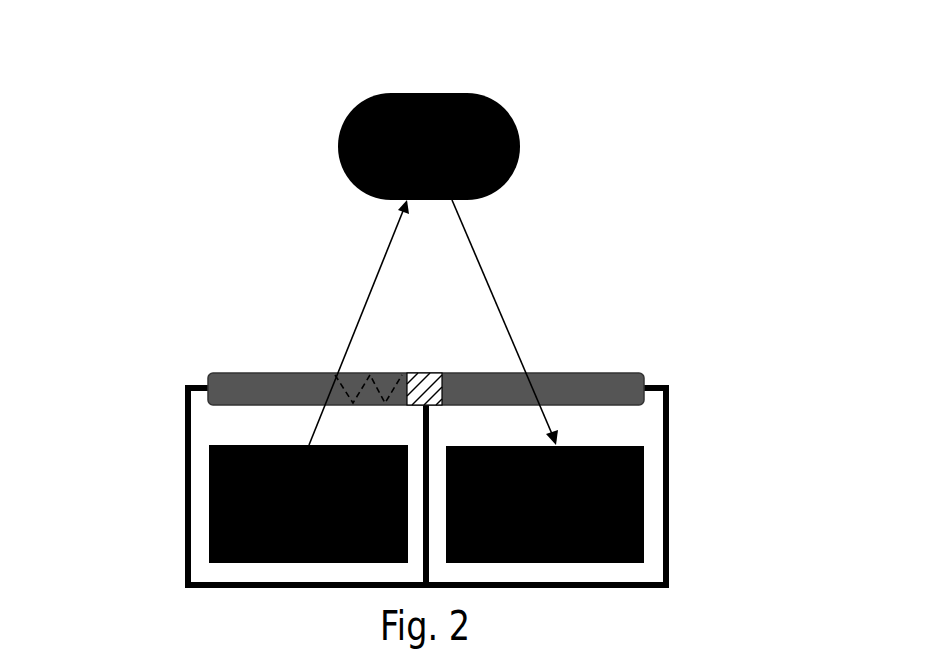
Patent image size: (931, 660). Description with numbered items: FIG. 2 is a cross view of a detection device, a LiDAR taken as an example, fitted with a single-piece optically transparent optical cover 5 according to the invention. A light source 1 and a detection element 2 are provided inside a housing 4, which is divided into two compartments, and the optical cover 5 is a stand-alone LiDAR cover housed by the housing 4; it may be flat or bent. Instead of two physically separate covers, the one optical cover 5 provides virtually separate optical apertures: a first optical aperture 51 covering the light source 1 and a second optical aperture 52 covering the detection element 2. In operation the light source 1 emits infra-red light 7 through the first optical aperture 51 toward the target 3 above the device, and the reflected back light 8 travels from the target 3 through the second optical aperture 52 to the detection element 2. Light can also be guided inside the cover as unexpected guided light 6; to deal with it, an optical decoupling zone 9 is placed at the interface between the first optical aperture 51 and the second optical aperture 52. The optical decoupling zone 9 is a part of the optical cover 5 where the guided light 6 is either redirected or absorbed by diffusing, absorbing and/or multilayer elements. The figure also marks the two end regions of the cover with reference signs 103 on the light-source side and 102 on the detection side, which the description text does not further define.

The light source 1 is at (209, 508).
The detection element 2 is at (644, 510).
The target 3 is at (427, 93).
The housing 4 is at (666, 562).
The optical cover 5 is at (237, 380).
The first optical aperture 51 is at (287, 390).
The second optical aperture 52 is at (572, 388).
The guided light 6 is at (368, 400).
The infra-red light 7 is at (365, 295).
The reflected back light 8 is at (497, 297).
The optical decoupling zone 9 is at (412, 395).
The second housing edge 102 is at (621, 368).
The first housing edge 103 is at (223, 390).